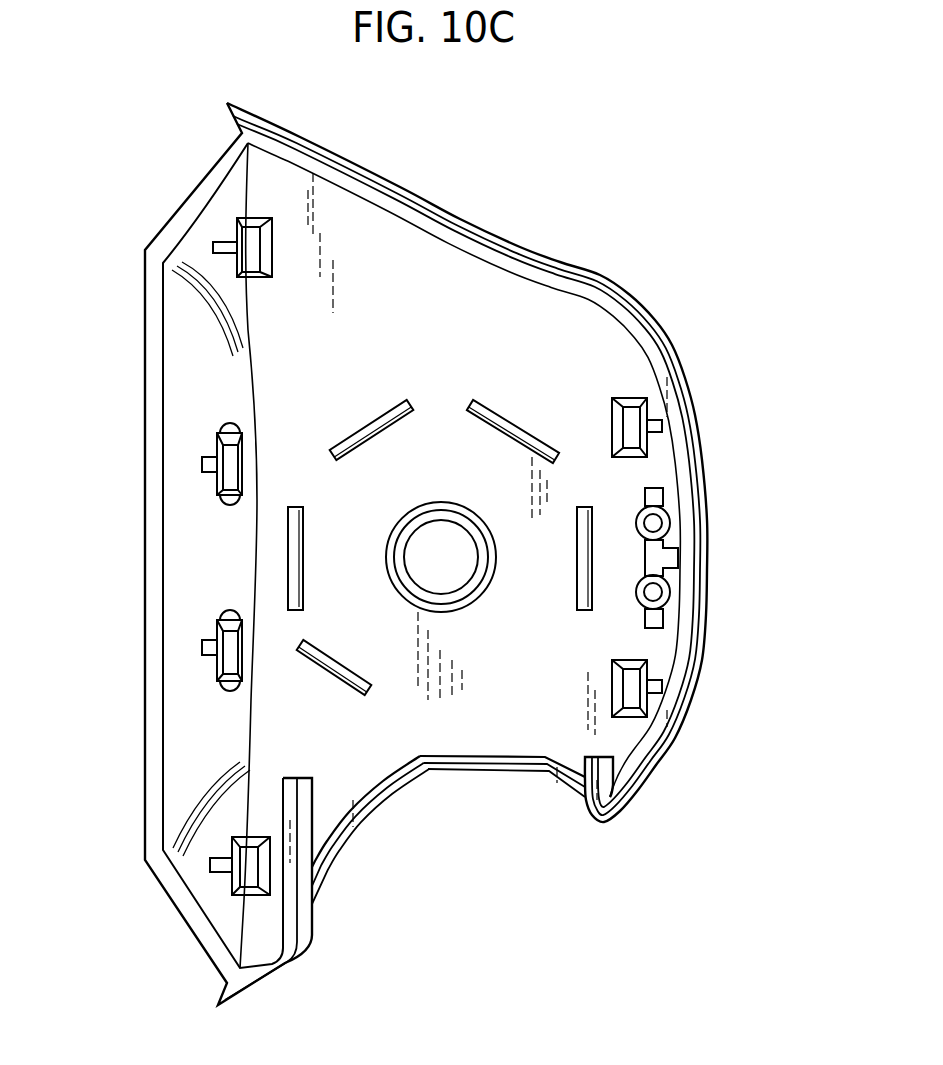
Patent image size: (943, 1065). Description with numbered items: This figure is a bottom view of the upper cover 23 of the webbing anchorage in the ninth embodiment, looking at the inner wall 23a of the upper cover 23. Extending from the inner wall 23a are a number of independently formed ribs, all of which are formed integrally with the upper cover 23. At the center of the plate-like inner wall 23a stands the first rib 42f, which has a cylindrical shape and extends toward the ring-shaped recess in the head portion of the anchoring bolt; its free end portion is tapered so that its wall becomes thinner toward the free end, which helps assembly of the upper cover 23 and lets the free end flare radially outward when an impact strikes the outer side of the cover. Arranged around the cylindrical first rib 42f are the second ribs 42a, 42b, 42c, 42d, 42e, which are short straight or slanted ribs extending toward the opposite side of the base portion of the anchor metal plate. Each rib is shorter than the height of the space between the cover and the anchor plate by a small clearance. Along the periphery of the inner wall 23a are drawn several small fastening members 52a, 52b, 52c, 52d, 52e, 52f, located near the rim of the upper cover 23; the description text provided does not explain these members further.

The upper cover 23 is at (594, 274).
The inner wall of the upper cover 23a is at (497, 320).
The second rib 42a is at (520, 435).
The second rib 42b is at (590, 610).
The second rib 42c is at (365, 688).
The second rib 42d is at (293, 537).
The second rib 42e is at (348, 440).
The first rib 42f is at (478, 590).
The clip 52a is at (648, 453).
The clip 52b is at (640, 713).
The clip 52c is at (237, 895).
The clip 52d is at (217, 660).
The clip 52e is at (217, 446).
The clip 52f is at (247, 222).